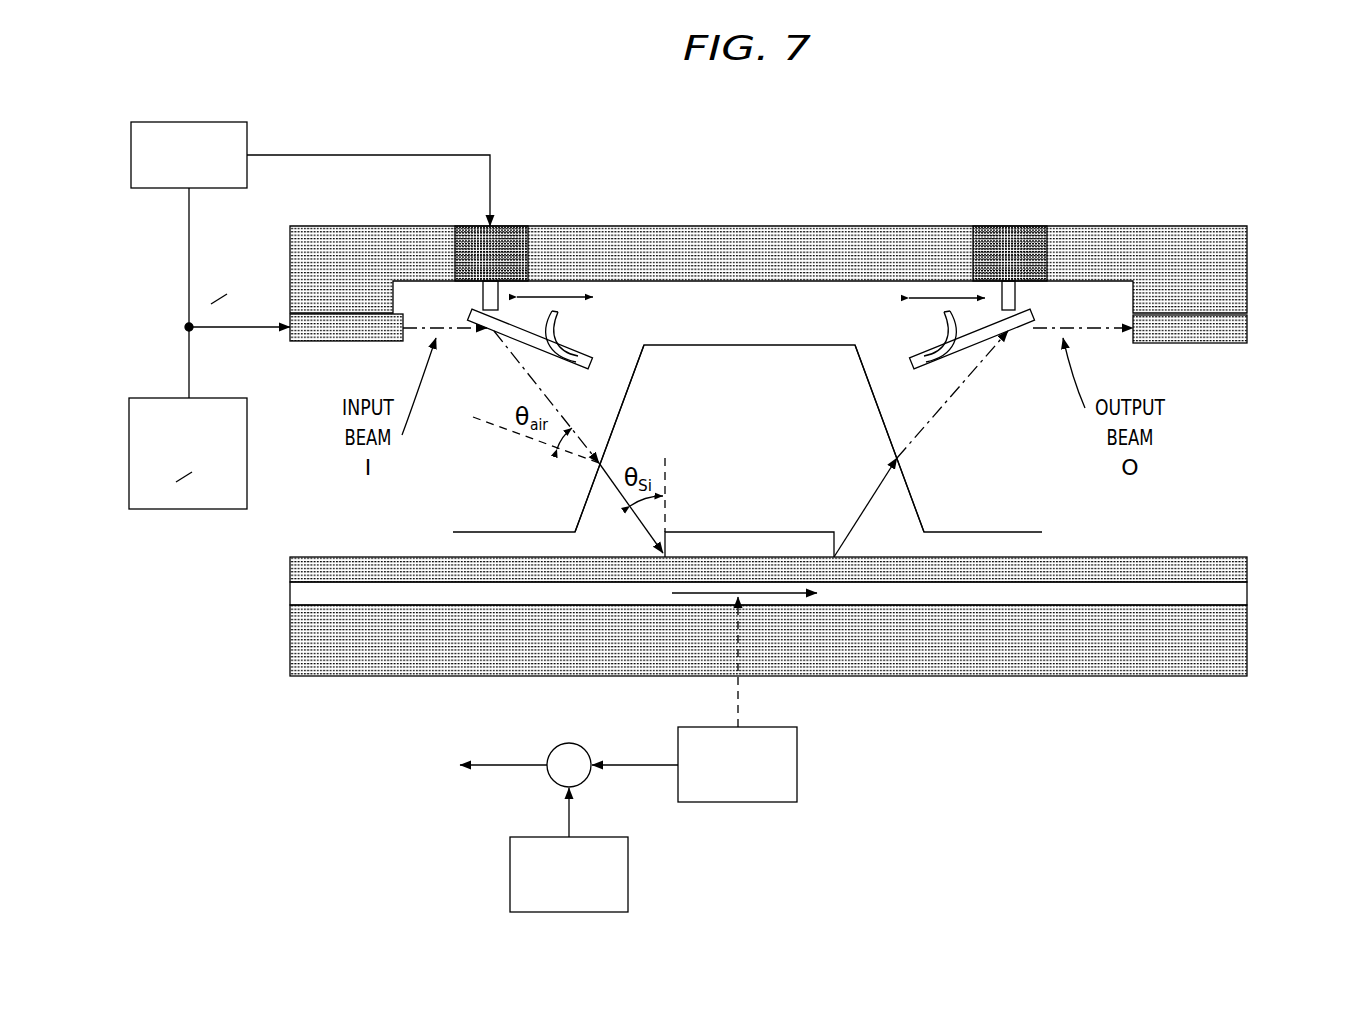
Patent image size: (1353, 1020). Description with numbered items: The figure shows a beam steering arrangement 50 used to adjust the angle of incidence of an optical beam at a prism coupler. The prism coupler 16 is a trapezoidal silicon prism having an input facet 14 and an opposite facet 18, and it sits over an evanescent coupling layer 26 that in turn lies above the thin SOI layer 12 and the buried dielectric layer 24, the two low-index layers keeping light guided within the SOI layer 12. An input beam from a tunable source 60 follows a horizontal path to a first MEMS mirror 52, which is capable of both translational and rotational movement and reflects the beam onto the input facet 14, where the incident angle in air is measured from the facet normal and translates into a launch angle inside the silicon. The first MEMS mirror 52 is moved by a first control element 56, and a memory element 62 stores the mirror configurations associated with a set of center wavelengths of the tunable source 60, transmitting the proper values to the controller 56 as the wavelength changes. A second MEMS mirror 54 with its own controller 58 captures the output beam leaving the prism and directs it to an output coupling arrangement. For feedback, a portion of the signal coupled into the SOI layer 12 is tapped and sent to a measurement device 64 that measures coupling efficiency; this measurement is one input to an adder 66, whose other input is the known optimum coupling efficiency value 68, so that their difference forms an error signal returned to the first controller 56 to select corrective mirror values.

The SOI layer 12 is at (1240, 597).
The input facet 14 is at (614, 418).
The prism coupler 16 is at (738, 341).
The second angled facet 18 is at (918, 505).
The buried dielectric layer 24 is at (1240, 648).
The evanescent coupling layer 26 is at (1240, 573).
The beam steering arrangement 50 is at (737, 143).
The first MEMS mirror 52 is at (589, 347).
The second MEMS mirror 54 is at (915, 350).
The first control element 56 is at (472, 226).
The controller 58 is at (1010, 226).
The tunable source 60 is at (152, 398).
The memory element 62 is at (190, 122).
The measurement device 64 is at (797, 766).
The adder 66 is at (573, 743).
The optimum coupling efficiency value 68 is at (628, 877).